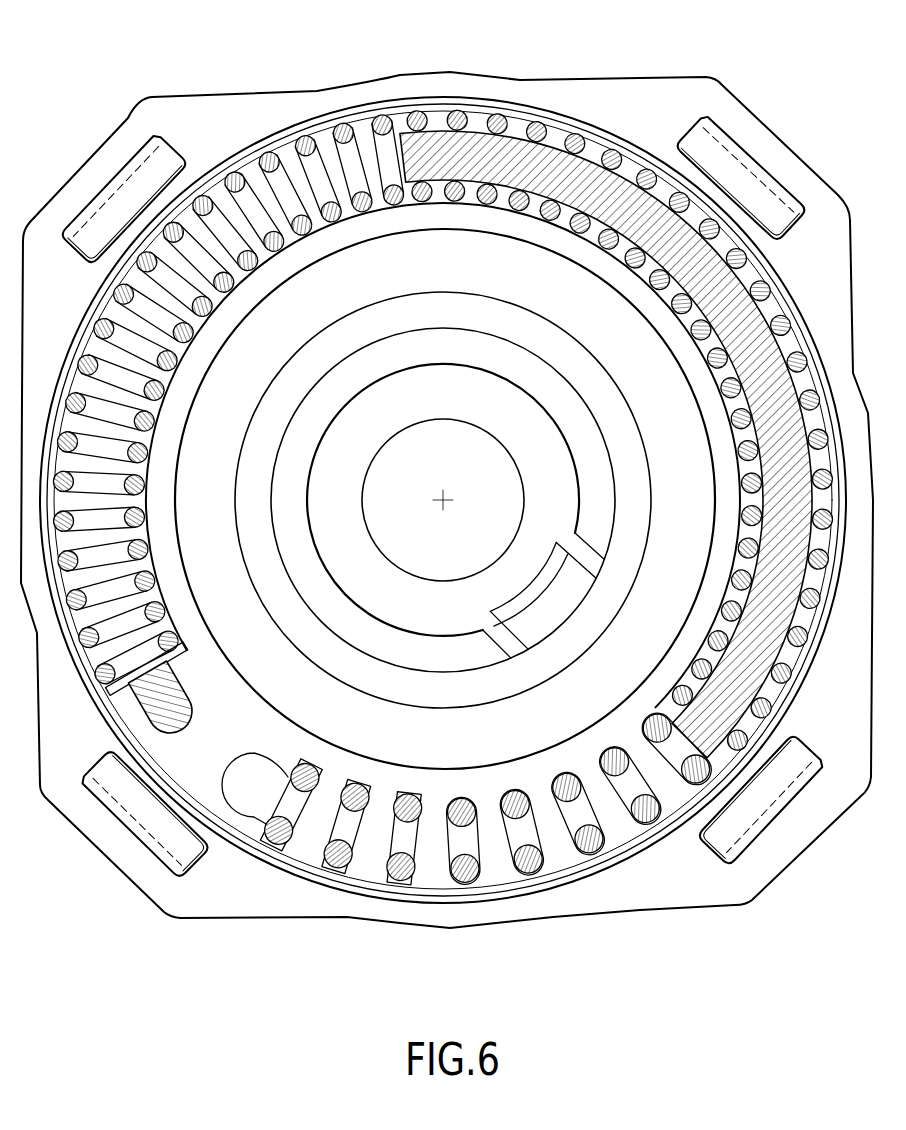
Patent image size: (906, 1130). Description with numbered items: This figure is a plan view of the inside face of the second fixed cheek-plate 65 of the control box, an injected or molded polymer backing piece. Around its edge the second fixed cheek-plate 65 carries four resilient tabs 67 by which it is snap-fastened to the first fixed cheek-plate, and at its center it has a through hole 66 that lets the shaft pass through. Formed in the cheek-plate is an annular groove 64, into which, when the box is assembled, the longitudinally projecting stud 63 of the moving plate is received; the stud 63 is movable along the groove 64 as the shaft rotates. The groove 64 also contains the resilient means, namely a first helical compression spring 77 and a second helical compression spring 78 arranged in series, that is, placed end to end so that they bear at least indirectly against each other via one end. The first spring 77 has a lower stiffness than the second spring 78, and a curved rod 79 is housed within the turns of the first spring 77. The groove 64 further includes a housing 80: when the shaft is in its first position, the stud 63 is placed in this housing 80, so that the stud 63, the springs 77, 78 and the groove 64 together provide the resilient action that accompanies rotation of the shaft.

The stud 63 is at (168, 672).
The annular groove 64 is at (635, 848).
The second fixed cheek-plate 65 is at (421, 66).
The through hole 66 is at (450, 498).
The resilient tabs 67 is at (120, 163).
The first helical compression spring 77 is at (157, 427).
The second helical compression spring 78 is at (432, 870).
The curved rod 79 is at (516, 167).
The housing 80 is at (168, 724).